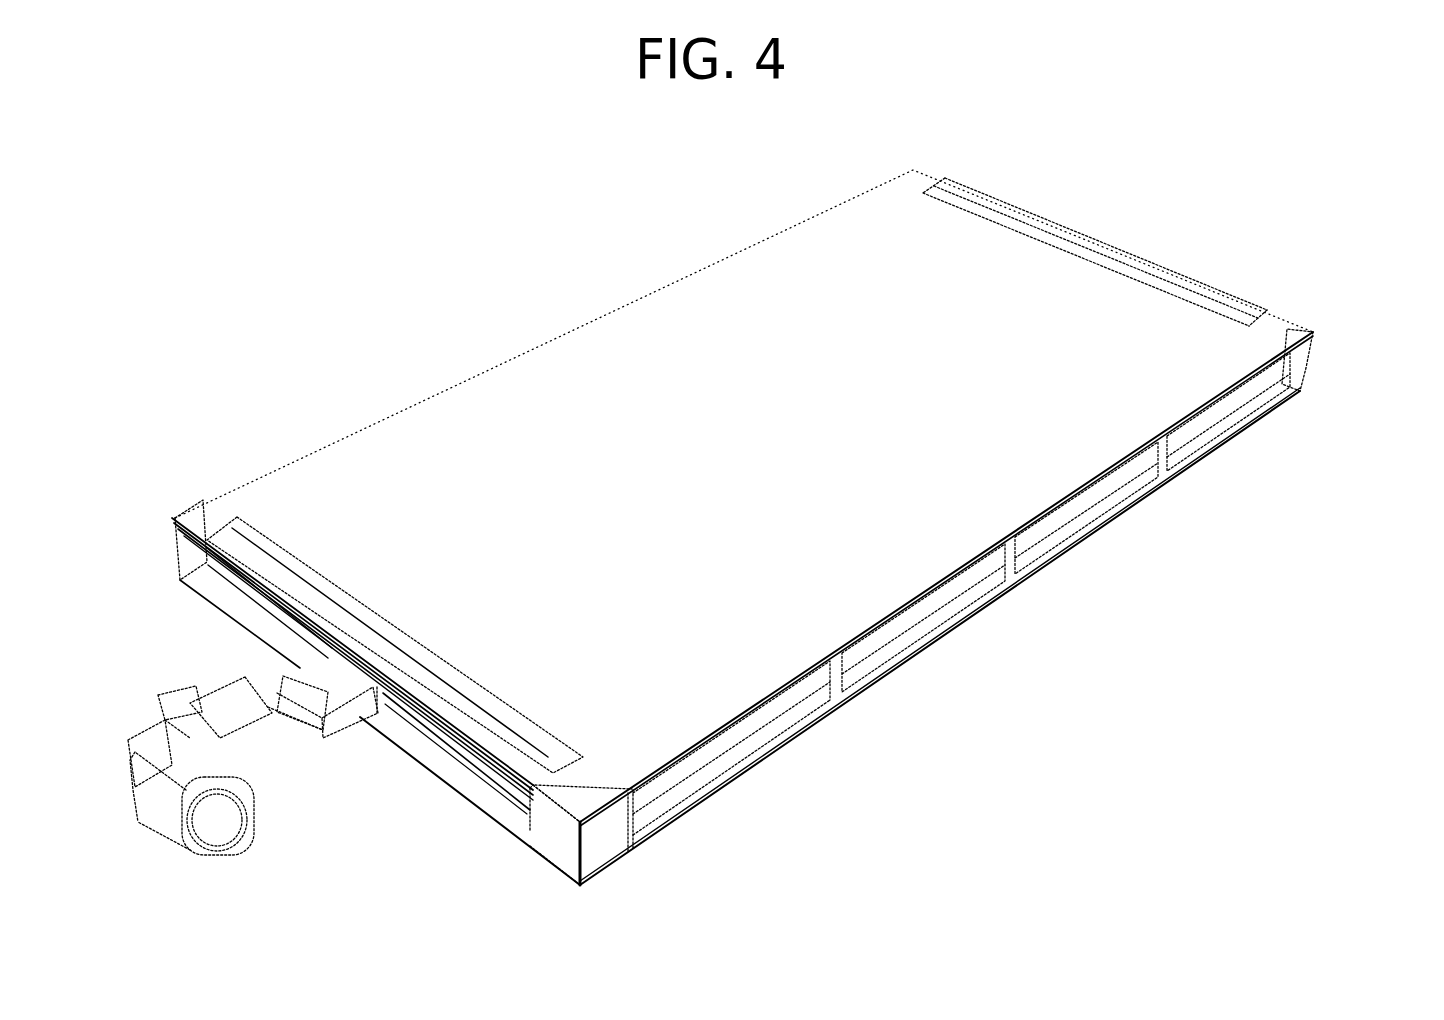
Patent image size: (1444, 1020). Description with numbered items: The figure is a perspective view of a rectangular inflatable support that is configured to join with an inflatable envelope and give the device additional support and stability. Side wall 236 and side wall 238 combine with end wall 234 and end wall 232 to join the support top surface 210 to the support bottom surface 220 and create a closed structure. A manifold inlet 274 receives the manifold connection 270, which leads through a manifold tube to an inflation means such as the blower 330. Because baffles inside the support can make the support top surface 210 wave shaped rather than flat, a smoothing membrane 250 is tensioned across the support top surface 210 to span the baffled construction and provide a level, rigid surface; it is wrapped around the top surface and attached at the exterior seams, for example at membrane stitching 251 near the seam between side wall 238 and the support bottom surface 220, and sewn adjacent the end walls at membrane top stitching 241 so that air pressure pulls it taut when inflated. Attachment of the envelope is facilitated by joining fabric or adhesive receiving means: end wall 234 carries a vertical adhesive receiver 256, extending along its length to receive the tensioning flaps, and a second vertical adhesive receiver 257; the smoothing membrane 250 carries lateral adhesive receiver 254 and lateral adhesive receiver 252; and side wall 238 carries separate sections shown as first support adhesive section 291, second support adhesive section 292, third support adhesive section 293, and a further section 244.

The support top surface 210 is at (200, 512).
The support bottom surface 220 is at (590, 884).
The end wall 232 is at (1310, 362).
The end wall 234 is at (557, 840).
The side wall 236 is at (180, 550).
The side wall 238 is at (607, 840).
The membrane top stitching 241 is at (235, 562).
The side panel 244 is at (1268, 395).
The smoothing membrane 250 is at (508, 375).
The membrane stitching 251 is at (698, 807).
The lateral adhesive receiver 252 is at (1027, 222).
The lateral adhesive receiver 254 is at (267, 535).
The vertical adhesive receiver 256 is at (515, 805).
The second vertical adhesive receiver 257 is at (238, 598).
The manifold connection 270 is at (288, 708).
The manifold inlet 274 is at (378, 710).
The first support adhesive section 291 is at (803, 712).
The second support adhesive section 292 is at (977, 592).
The third support adhesive section 293 is at (1137, 487).
The blower 330 is at (220, 829).